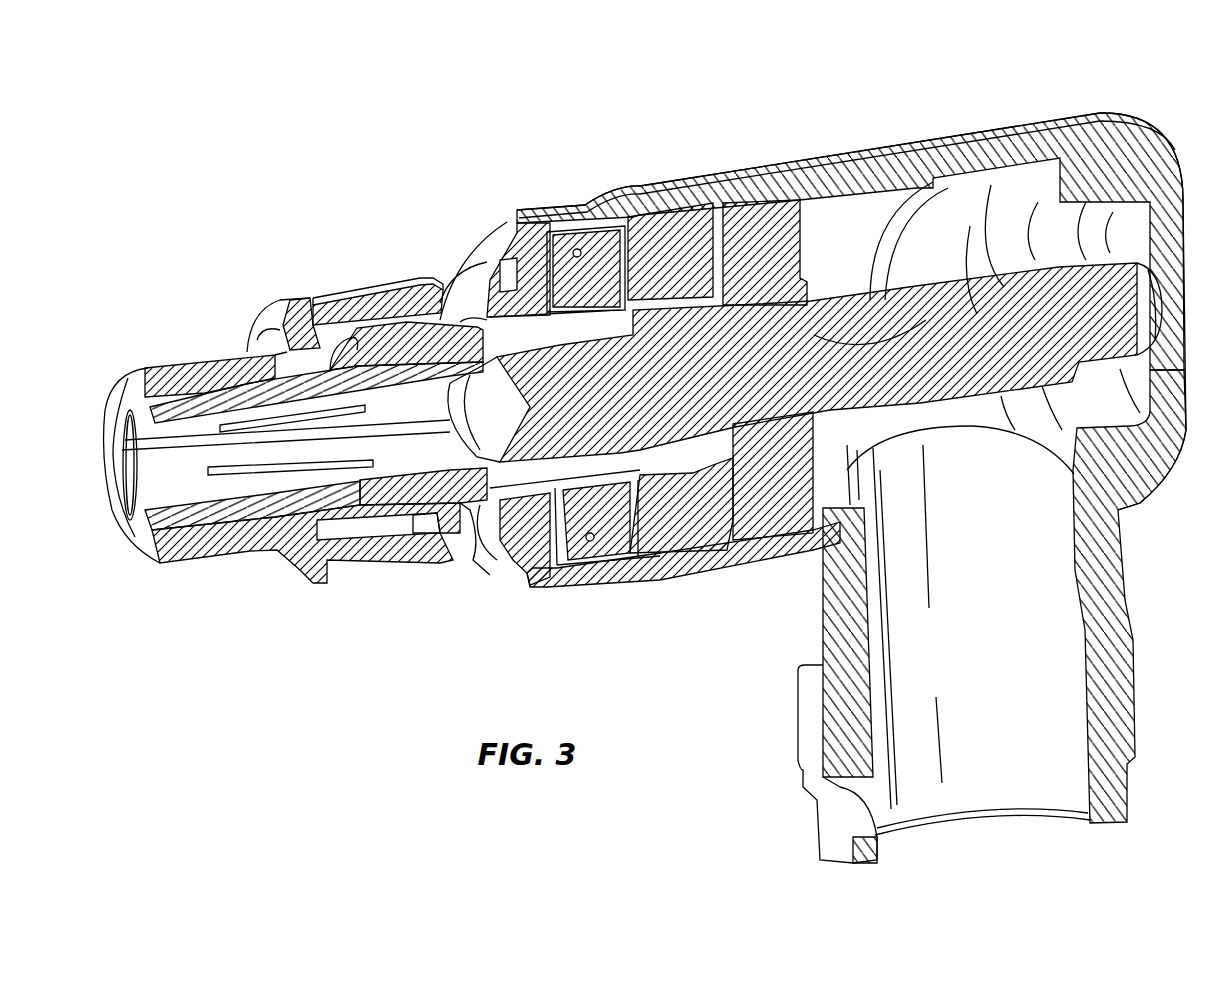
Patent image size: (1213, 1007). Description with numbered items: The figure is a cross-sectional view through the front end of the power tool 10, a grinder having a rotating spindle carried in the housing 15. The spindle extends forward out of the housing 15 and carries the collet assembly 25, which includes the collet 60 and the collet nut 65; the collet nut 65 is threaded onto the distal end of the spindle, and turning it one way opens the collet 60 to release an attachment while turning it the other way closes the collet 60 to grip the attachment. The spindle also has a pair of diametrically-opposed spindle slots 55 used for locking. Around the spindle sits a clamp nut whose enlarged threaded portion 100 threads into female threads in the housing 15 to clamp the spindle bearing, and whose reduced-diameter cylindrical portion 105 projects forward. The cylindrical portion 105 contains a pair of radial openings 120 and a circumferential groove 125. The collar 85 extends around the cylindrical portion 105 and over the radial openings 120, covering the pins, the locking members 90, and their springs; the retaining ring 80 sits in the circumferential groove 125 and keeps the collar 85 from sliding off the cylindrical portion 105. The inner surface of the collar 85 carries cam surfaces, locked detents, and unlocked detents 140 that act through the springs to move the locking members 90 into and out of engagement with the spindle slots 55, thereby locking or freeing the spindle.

The power tool 10 is at (862, 83).
The housing 15 is at (933, 162).
The collet assembly 25 is at (968, 330).
The spindle slots 55 is at (440, 313).
The collet 60 is at (200, 395).
The collet nut 65 is at (180, 370).
The retaining ring 80 is at (478, 268).
The collar 85 is at (559, 593).
The locking members 90 is at (620, 237).
The threaded portion 100 is at (635, 248).
The cylindrical portion 105 is at (542, 237).
The radial openings 120 is at (677, 253).
The circumferential groove 125 is at (517, 579).
The unlocked detents 140 is at (748, 215).